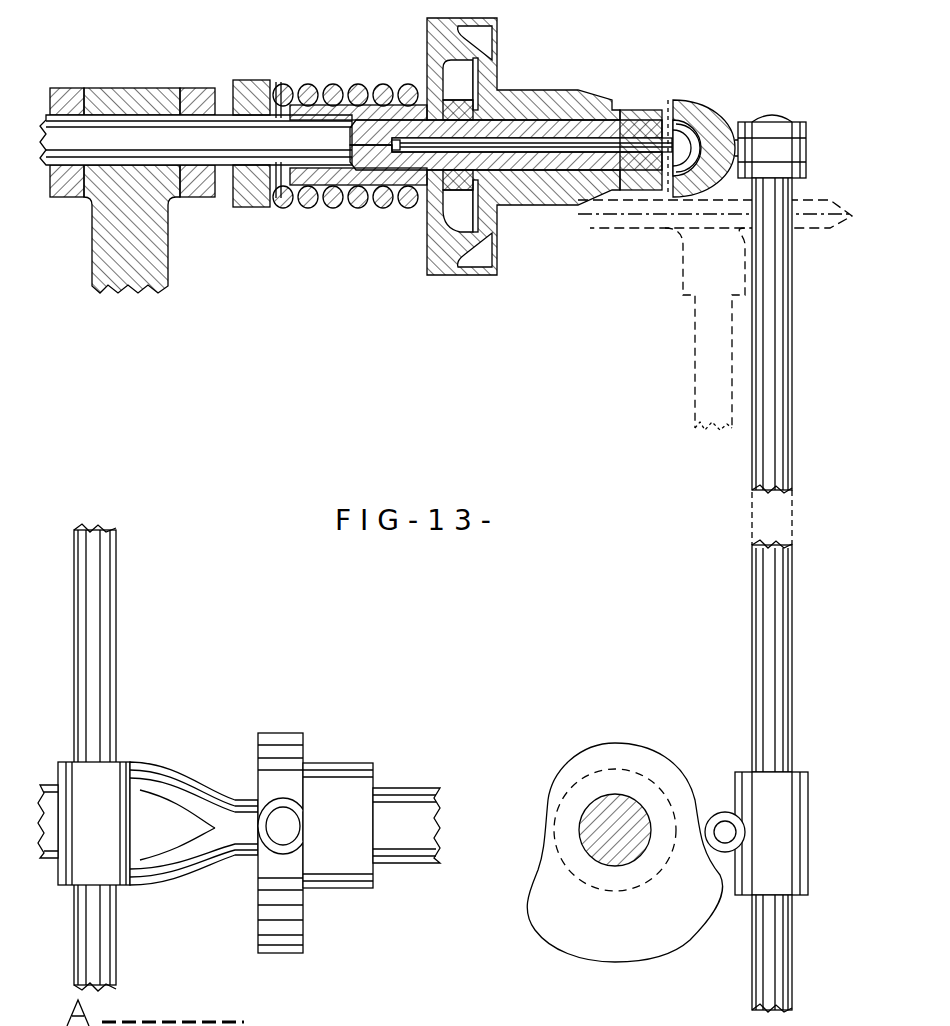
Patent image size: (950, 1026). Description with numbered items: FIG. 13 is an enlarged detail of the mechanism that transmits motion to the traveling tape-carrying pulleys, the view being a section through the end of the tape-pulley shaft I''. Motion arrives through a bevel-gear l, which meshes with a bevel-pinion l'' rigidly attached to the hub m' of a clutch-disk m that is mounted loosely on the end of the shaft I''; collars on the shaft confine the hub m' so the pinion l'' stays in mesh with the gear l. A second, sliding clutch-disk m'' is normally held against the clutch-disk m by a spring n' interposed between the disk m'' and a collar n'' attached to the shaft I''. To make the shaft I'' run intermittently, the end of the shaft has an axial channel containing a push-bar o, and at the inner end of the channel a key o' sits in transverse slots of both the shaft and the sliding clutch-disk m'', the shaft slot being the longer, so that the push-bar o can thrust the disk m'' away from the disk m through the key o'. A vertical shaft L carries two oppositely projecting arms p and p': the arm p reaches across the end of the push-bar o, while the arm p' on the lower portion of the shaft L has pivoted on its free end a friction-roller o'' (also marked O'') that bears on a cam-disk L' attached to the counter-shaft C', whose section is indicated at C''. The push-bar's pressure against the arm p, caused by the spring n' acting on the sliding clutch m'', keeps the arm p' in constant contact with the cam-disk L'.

The shaft I'' is at (196, 140).
The collar n'' is at (251, 158).
The spring n' is at (350, 159).
The sliding clutch-disk m'' is at (458, 154).
The clutch-disk m is at (523, 157).
The key o' is at (511, 136).
The hub m' is at (506, 168).
The bevel-pinion l'' is at (606, 181).
The push-bar o is at (696, 140).
The arm p is at (705, 133).
The bevel-gear l is at (715, 315).
The vertical shaft L is at (423, 563).
The arm p' is at (433, 823).
The cam-disk L' is at (490, 847).
The friction-roller O'' is at (285, 826).
The counter-shaft C' is at (371, 825).
The shaft section C'' is at (615, 830).
The friction-roller o'' is at (717, 819).